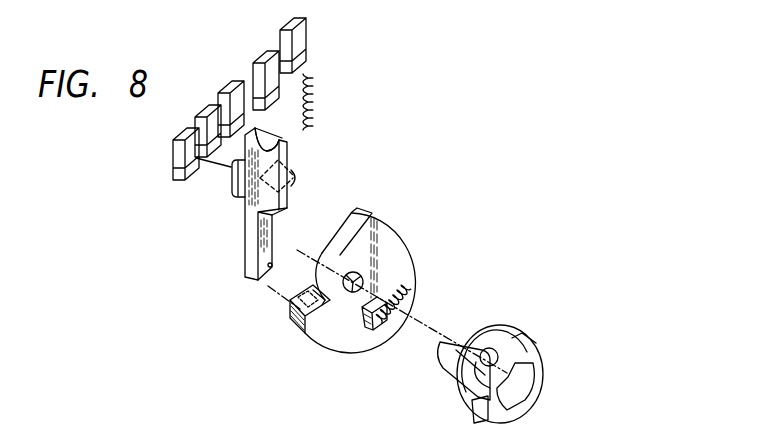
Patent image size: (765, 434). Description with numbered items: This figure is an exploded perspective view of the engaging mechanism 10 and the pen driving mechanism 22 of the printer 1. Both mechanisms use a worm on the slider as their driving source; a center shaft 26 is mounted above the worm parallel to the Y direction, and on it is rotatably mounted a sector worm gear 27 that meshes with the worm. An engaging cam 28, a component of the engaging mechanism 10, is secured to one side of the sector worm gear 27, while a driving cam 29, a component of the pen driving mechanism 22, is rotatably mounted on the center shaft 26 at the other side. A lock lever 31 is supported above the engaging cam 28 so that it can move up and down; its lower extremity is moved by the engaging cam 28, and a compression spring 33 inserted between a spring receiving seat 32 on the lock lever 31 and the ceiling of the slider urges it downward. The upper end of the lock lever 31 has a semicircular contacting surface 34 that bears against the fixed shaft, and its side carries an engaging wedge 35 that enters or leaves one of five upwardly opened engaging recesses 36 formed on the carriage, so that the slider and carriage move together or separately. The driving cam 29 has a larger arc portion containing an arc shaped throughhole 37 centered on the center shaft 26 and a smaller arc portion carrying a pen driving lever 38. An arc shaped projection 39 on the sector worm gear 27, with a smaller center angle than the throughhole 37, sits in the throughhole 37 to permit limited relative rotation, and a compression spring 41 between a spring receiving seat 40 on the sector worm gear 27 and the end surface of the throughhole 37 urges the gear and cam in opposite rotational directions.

The device 1 is at (449, 126).
The engaging mechanism 10 is at (174, 262).
The pen driving mechanism 22 is at (541, 255).
The center shaft 26 is at (440, 309).
The sector worm gear 27 is at (379, 223).
The engaging cam 28 is at (308, 340).
The driving cam 29 is at (534, 345).
The lock lever 31 is at (247, 249).
The spring receiving seat 32 is at (298, 176).
The compression spring 33 is at (314, 89).
The contacting surface 34 is at (304, 128).
The engaging wedge 35 is at (232, 187).
The engaging recesses 36 is at (243, 80).
The arc shaped throughhole 37 is at (522, 389).
The pen driving lever 38 is at (456, 367).
The arc shaped projection 39 is at (364, 283).
The spring receiving seat 40 is at (372, 336).
The compression spring 41 is at (416, 298).